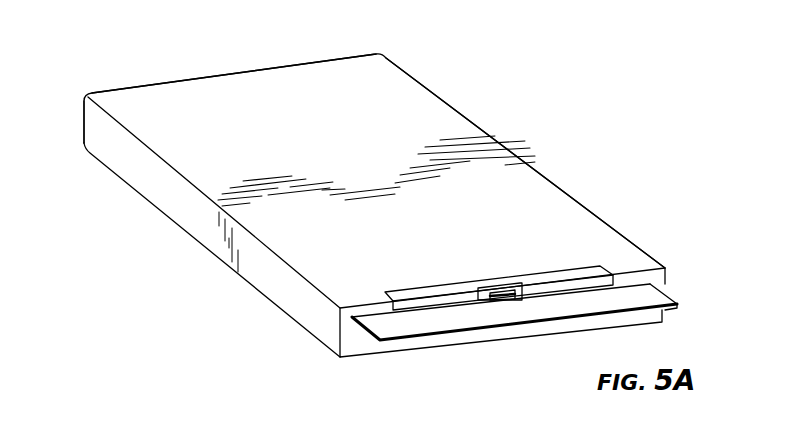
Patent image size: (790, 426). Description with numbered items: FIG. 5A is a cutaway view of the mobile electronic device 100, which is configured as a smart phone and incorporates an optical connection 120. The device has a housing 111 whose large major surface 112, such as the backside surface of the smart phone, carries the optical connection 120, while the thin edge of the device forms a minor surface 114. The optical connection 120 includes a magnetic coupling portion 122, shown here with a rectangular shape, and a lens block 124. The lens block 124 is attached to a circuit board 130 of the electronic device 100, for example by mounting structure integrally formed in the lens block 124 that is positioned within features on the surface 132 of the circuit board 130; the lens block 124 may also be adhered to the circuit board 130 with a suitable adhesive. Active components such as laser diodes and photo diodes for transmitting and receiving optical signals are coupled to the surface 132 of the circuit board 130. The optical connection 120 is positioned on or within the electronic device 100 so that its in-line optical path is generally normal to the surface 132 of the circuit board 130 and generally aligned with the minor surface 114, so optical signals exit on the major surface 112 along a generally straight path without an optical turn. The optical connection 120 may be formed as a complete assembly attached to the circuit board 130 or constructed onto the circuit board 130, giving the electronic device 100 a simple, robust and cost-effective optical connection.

The mobile electronic device 100 is at (146, 49).
The housing 111 is at (283, 46).
The major surface 112 is at (558, 218).
The minor surface 114 is at (318, 313).
The optical connection 120 is at (542, 252).
The magnetic coupling portion 122 is at (410, 278).
The lens block 124 is at (513, 315).
The circuit board 130 is at (447, 333).
The surface of the circuit board 132 is at (650, 298).